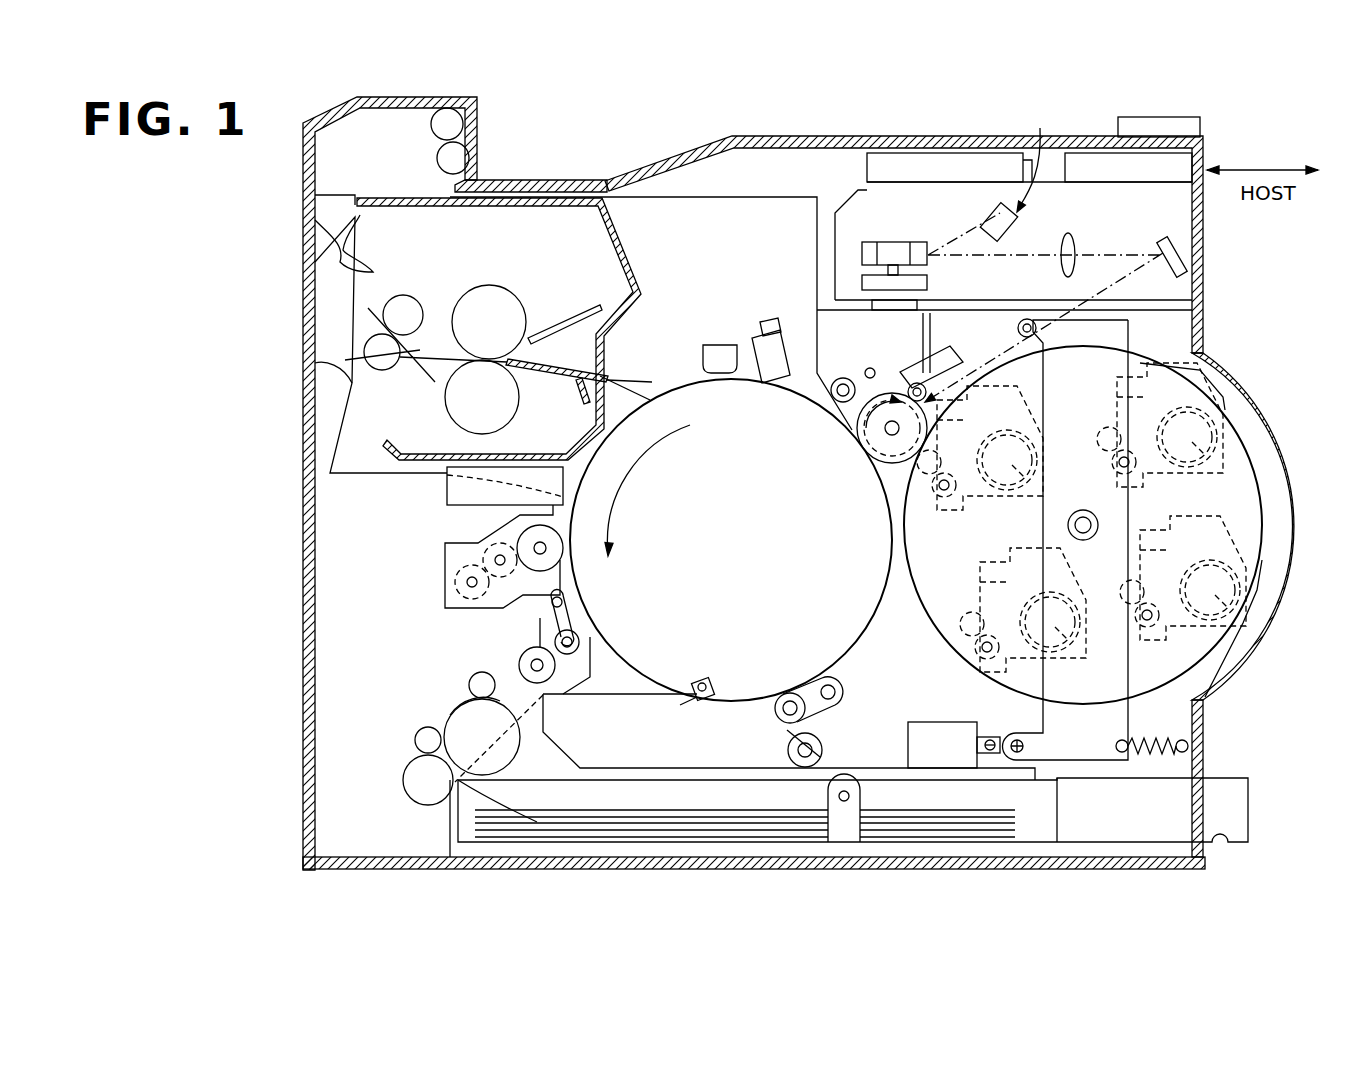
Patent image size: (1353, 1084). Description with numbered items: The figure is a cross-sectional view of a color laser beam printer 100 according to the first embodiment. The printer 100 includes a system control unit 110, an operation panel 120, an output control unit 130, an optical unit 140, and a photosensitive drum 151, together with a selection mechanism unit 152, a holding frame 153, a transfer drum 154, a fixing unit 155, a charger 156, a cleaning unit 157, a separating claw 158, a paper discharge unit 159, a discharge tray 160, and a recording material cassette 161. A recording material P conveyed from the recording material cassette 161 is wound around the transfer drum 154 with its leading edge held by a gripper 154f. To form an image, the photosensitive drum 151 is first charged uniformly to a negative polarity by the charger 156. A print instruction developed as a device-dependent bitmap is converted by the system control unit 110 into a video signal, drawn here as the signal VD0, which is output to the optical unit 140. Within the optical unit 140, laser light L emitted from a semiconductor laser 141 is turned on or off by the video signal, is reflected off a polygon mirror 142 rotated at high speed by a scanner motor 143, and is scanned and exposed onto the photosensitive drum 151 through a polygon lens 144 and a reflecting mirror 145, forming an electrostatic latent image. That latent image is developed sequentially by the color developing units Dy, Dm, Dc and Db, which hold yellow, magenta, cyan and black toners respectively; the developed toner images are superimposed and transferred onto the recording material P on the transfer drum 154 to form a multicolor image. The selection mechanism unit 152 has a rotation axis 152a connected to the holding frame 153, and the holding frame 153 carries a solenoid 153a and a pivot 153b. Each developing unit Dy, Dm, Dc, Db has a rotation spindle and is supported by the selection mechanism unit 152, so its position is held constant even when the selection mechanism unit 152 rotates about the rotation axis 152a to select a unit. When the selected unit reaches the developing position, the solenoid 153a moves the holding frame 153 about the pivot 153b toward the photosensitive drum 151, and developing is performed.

The printer 100 is at (803, 884).
The system control unit 110 is at (1100, 158).
The operation panel 120 is at (1195, 128).
The output control unit 130 is at (905, 165).
The optical unit 140 is at (855, 194).
The semiconductor laser 141 is at (985, 211).
The polygon mirror 142 is at (887, 241).
The scanner motor 143 is at (862, 281).
The polygon lens 144 is at (1067, 233).
The reflecting mirror 145 is at (1166, 240).
The photosensitive drum 151 is at (862, 454).
The selection mechanism unit 152 is at (1248, 432).
The rotation axis 152a is at (1099, 525).
The holding frame 153 is at (1130, 720).
The solenoid 153a is at (925, 730).
The pivot 153b is at (1027, 318).
The transfer drum 154 is at (738, 702).
The gripper 154f is at (705, 680).
The fixing unit 155 is at (352, 385).
The charger 156 is at (947, 367).
The cleaning unit 157 is at (870, 368).
The separating claw 158 is at (645, 379).
The paper discharge unit 159 is at (468, 138).
The discharge tray 160 is at (577, 180).
The recording material cassette 161 is at (1248, 809).
The yellow developing unit Dy is at (1043, 400).
The cyan developing unit Dc is at (1222, 379).
The black developing unit Db is at (957, 657).
The magenta developing unit Dm is at (1243, 625).
The recording material P is at (490, 809).
The laser beam L is at (1113, 253).
The video signal VD0 is at (1040, 157).